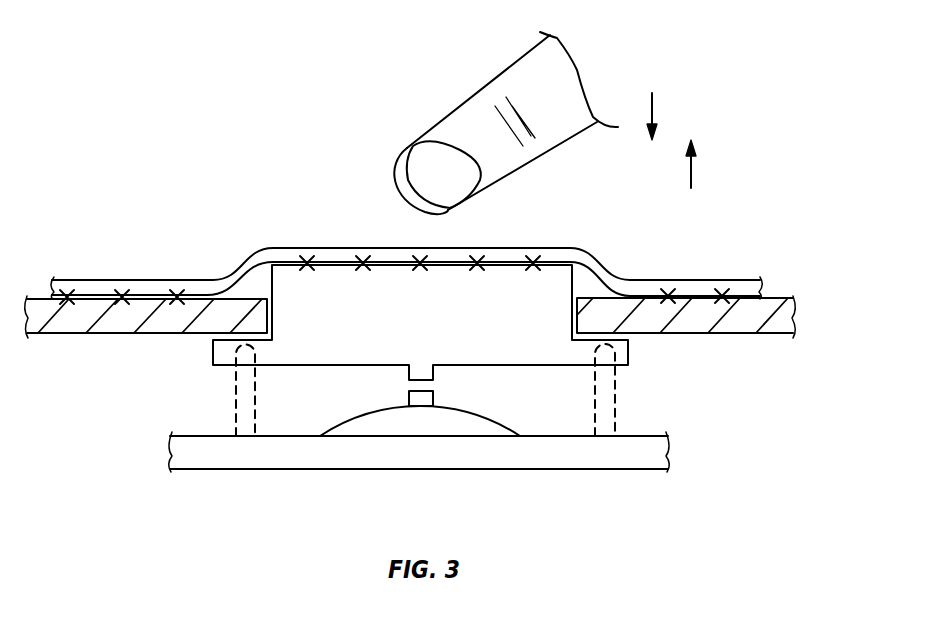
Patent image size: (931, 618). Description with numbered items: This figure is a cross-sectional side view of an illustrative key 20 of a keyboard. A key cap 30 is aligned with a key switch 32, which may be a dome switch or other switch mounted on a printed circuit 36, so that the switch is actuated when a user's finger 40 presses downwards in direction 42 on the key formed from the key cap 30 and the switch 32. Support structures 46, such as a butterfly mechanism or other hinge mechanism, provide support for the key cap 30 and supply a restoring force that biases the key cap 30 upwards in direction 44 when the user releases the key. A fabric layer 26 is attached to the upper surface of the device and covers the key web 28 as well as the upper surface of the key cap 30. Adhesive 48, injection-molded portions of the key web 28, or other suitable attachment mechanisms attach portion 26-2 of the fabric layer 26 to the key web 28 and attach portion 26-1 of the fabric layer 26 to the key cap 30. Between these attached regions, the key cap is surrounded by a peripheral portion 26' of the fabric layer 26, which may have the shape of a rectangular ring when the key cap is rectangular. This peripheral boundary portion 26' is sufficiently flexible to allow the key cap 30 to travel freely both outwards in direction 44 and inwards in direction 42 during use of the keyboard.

The key 20 is at (380, 221).
The fabric layer 26 is at (132, 267).
The peripheral portion of fabric layer 26' is at (422, 263).
The portion of fabric layer attached to key cap 26-1 is at (516, 256).
The portion of fabric layer attached to key web 26-2 is at (750, 283).
The key web 28 is at (70, 325).
The key cap 30 is at (345, 286).
The key switch 32 is at (478, 418).
The printed circuit 36 is at (567, 458).
The finger 40 is at (467, 98).
The downward direction 42 is at (652, 108).
The upward direction 44 is at (691, 167).
The support structures 46 is at (235, 388).
The adhesive 48 is at (177, 288).